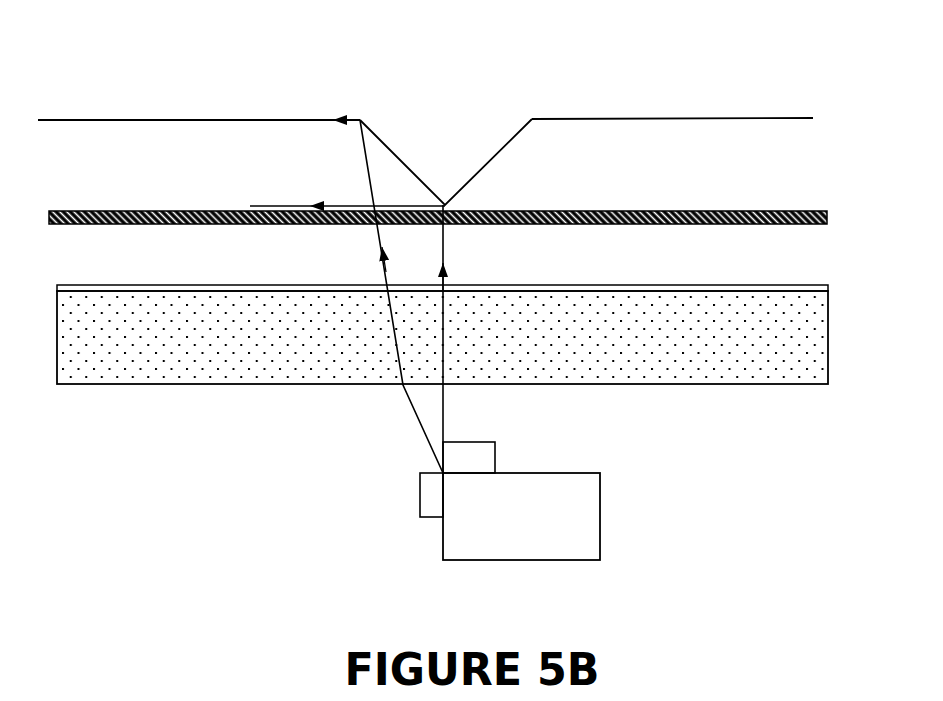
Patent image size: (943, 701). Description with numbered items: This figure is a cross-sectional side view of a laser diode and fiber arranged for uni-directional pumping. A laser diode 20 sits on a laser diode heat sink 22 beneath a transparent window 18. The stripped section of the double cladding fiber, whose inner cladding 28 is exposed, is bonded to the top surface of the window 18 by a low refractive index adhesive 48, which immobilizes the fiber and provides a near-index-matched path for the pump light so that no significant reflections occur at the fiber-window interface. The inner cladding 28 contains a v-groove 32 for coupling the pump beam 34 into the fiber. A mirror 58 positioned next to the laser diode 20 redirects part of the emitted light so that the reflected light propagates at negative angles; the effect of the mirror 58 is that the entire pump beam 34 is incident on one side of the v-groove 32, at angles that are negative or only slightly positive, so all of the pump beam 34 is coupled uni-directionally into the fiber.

The transparent substrate/window 18 is at (618, 362).
The laser diode 20 is at (412, 505).
The laser diode heat sink 22 is at (550, 533).
The inner cladding 28 is at (165, 120).
The v-groove 32 is at (445, 133).
The pump beam 34 is at (435, 418).
The low refractive index adhesive 48 is at (245, 288).
The mirror 58 is at (448, 453).